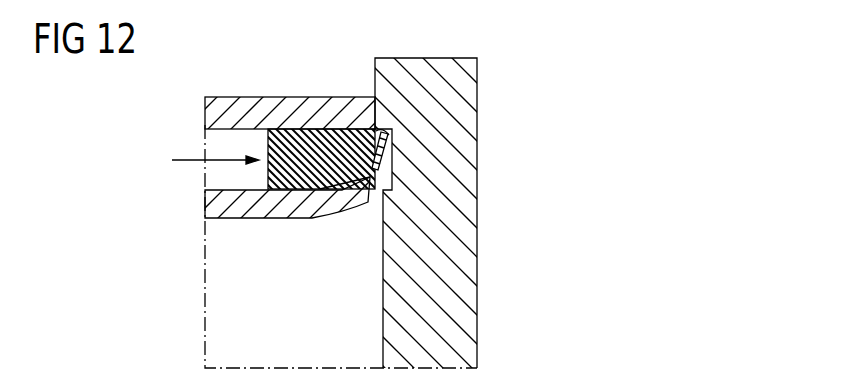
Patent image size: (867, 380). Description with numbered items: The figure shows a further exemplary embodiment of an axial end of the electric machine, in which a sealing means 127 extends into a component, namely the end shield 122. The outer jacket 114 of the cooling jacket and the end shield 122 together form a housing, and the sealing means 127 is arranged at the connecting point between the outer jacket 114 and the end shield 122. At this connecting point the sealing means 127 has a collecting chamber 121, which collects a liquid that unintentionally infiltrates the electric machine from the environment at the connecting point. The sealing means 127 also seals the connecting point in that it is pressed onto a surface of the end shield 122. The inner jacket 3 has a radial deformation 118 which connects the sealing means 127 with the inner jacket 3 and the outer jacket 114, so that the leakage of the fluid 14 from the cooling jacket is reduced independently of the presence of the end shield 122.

The inner jacket 3 is at (208, 204).
The fluid 14 is at (188, 158).
The outer jacket 114 is at (232, 104).
The radial deformation 118 is at (336, 206).
The collecting chamber 121 is at (382, 130).
The end shield 122 is at (465, 234).
The sealing means 127 is at (324, 134).